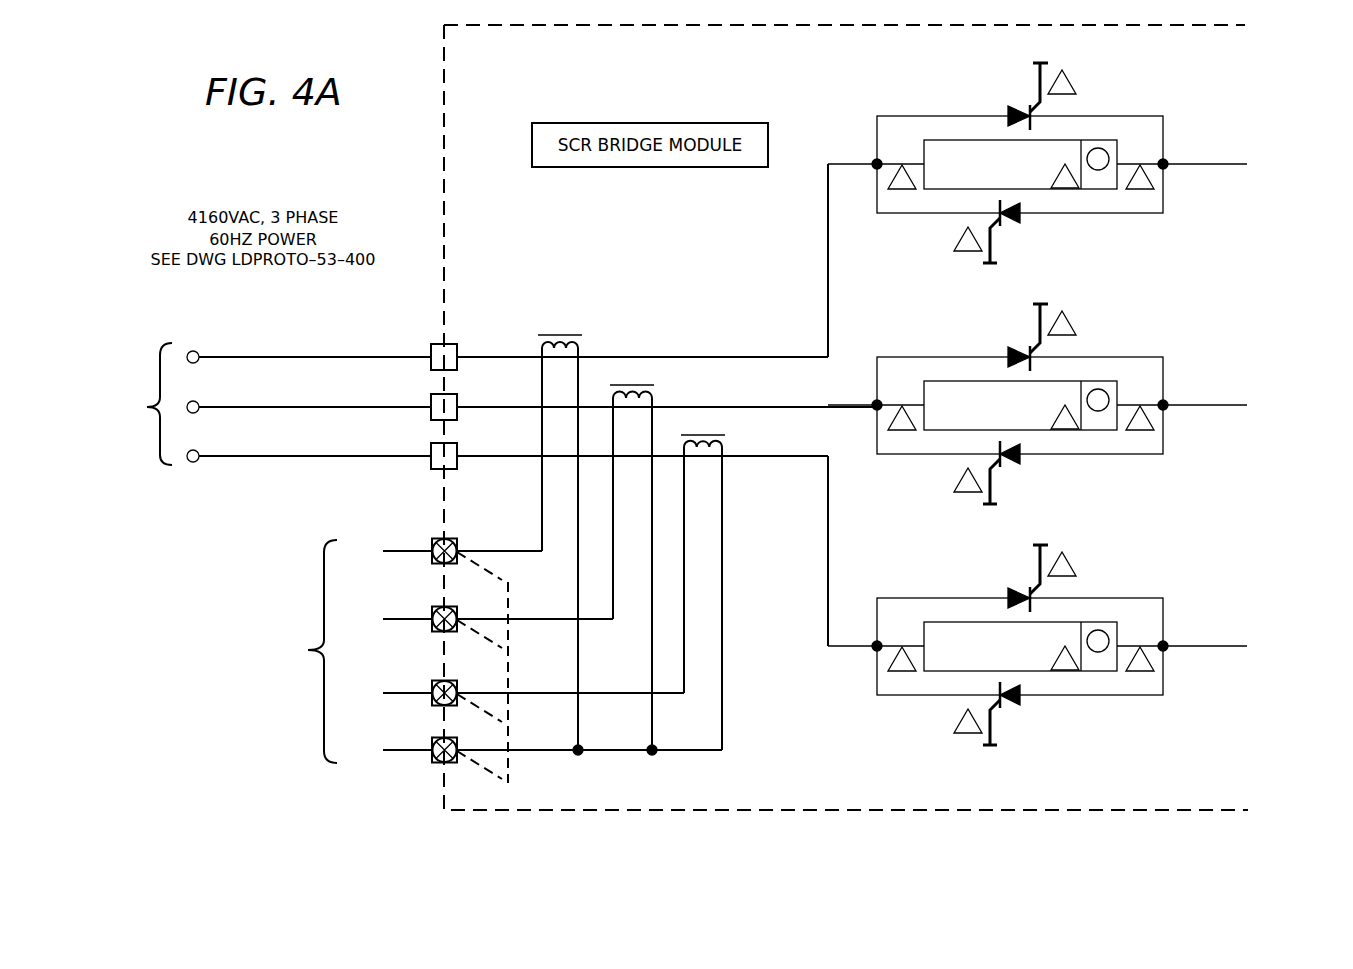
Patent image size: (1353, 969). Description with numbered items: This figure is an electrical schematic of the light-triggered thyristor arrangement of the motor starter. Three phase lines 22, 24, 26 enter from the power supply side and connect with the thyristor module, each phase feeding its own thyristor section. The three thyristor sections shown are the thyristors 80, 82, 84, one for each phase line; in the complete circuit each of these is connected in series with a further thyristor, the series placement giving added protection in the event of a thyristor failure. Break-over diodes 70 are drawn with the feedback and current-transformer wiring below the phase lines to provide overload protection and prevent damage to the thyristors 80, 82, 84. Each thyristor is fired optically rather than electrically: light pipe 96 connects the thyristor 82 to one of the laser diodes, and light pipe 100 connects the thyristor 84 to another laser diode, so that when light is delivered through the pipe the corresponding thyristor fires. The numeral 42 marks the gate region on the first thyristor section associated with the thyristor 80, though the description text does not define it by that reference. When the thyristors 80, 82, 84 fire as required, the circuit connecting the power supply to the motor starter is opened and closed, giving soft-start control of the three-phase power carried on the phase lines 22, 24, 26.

The phase line 22 is at (297, 355).
The phase line 24 is at (313, 405).
The phase line 26 is at (347, 457).
The SCR AP1 thyristor 42 is at (1042, 72).
The light pipe 96 is at (1042, 313).
The light pipe 100 is at (1042, 554).
The thyristor 80 is at (1140, 207).
The thyristor 82 is at (1140, 448).
The thyristor 84 is at (1140, 689).
The break-over diodes 70 is at (739, 750).